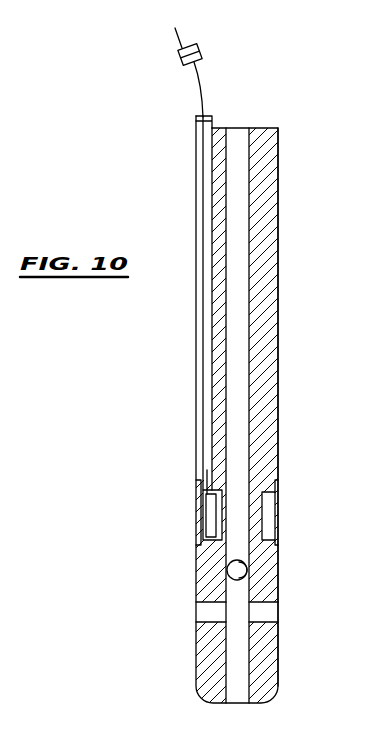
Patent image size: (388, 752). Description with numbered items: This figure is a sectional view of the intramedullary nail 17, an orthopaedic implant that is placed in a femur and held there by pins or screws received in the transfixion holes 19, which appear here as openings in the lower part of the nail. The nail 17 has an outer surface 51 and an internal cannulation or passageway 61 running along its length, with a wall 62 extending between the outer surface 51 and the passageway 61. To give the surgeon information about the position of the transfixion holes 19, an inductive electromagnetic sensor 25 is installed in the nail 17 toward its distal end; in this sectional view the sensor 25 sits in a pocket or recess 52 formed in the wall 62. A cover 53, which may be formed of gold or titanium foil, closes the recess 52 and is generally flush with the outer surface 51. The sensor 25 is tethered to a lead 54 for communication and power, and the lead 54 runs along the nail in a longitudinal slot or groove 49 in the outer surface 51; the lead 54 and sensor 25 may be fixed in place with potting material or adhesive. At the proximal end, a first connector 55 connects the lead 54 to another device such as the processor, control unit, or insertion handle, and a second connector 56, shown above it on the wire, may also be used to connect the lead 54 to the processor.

The intramedullary nail 17 is at (300, 239).
The transfixion holes 19 is at (247, 572).
The inductive electromagnetic sensor 25 is at (210, 517).
The longitudinal slot or groove 49 is at (210, 353).
The outer surface 51 is at (278, 322).
The pocket or recess 52 is at (218, 502).
The cover 53 is at (275, 492).
The lead 54 is at (202, 298).
The first connector 55 is at (196, 119).
The second connector 56 is at (201, 51).
The cannulation or passageway 61 is at (247, 226).
The wall 62 is at (265, 376).